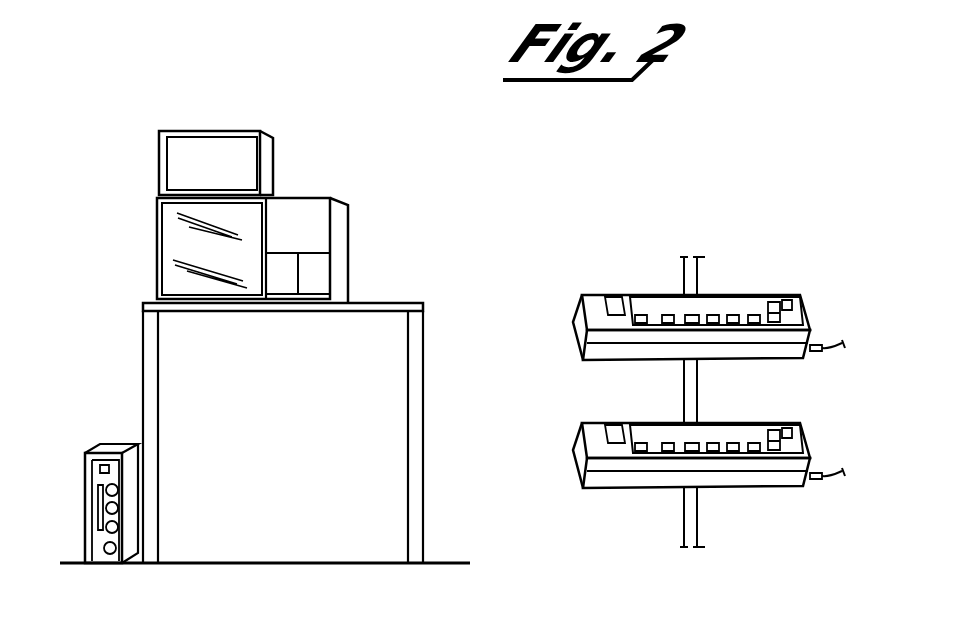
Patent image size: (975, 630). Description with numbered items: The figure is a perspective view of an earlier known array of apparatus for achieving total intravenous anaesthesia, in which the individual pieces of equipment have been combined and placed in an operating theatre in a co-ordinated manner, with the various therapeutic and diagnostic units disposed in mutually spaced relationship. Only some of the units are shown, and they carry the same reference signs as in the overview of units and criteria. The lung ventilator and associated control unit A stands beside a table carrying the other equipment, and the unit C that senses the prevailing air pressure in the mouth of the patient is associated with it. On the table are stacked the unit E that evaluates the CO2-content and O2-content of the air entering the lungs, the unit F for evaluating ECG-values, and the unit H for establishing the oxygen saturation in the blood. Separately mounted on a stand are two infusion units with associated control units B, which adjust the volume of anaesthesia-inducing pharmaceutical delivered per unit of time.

The lung ventilator and associated control unit A is at (82, 463).
The infusion unit and associated control unit B is at (812, 318).
The air pressure sensing unit C is at (98, 503).
The CO2 and O2 content evaluating unit E is at (322, 217).
The ECG evaluating unit F is at (160, 156).
The oxygen saturation unit H is at (323, 265).